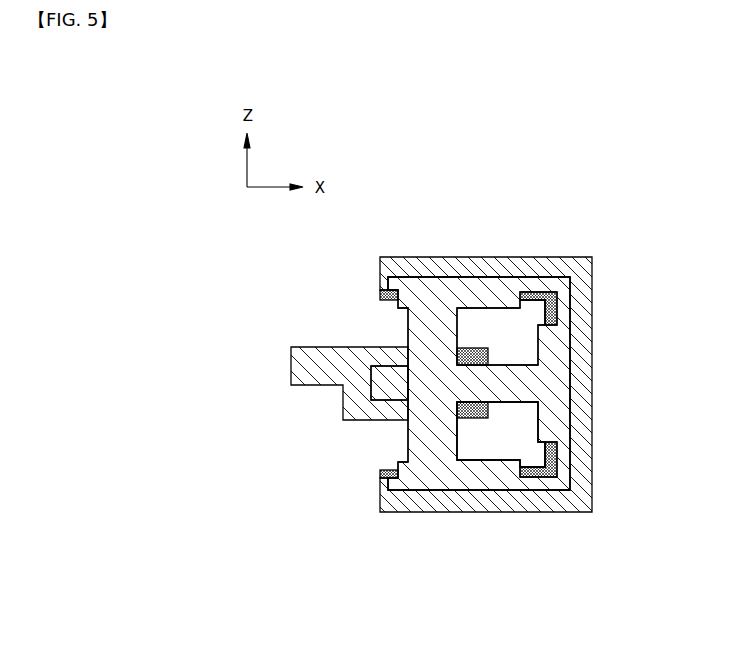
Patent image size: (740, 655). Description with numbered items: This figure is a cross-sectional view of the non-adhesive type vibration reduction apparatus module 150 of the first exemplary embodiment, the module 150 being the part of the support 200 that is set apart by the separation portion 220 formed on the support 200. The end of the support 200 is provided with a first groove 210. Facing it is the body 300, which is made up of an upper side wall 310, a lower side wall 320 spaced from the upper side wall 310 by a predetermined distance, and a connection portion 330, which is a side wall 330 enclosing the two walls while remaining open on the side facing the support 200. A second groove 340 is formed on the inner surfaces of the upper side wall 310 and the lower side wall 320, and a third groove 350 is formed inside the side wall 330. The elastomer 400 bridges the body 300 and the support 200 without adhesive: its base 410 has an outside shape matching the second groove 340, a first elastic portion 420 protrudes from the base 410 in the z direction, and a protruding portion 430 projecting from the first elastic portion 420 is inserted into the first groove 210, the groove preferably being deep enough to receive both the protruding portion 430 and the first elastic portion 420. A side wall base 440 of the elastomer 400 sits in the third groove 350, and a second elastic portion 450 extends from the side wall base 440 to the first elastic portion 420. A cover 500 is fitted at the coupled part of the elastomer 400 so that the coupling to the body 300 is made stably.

The module 150 is at (641, 182).
The support 200 is at (256, 437).
The first groove 210 is at (373, 387).
The separation portion 220 is at (300, 370).
The body 300 is at (435, 198).
The upper side wall 310 is at (432, 257).
The lower side wall 320 is at (508, 503).
The connection portion 330 is at (587, 359).
The second groove 340 is at (484, 272).
The third groove 350 is at (558, 292).
The elastomer 400 is at (573, 563).
The base 410 is at (420, 488).
The first elastic portion 420 is at (452, 428).
The protruding portion 430 is at (392, 382).
The side wall base 440 is at (557, 413).
The second elastic portion 450 is at (513, 387).
The cover 500 is at (379, 295).